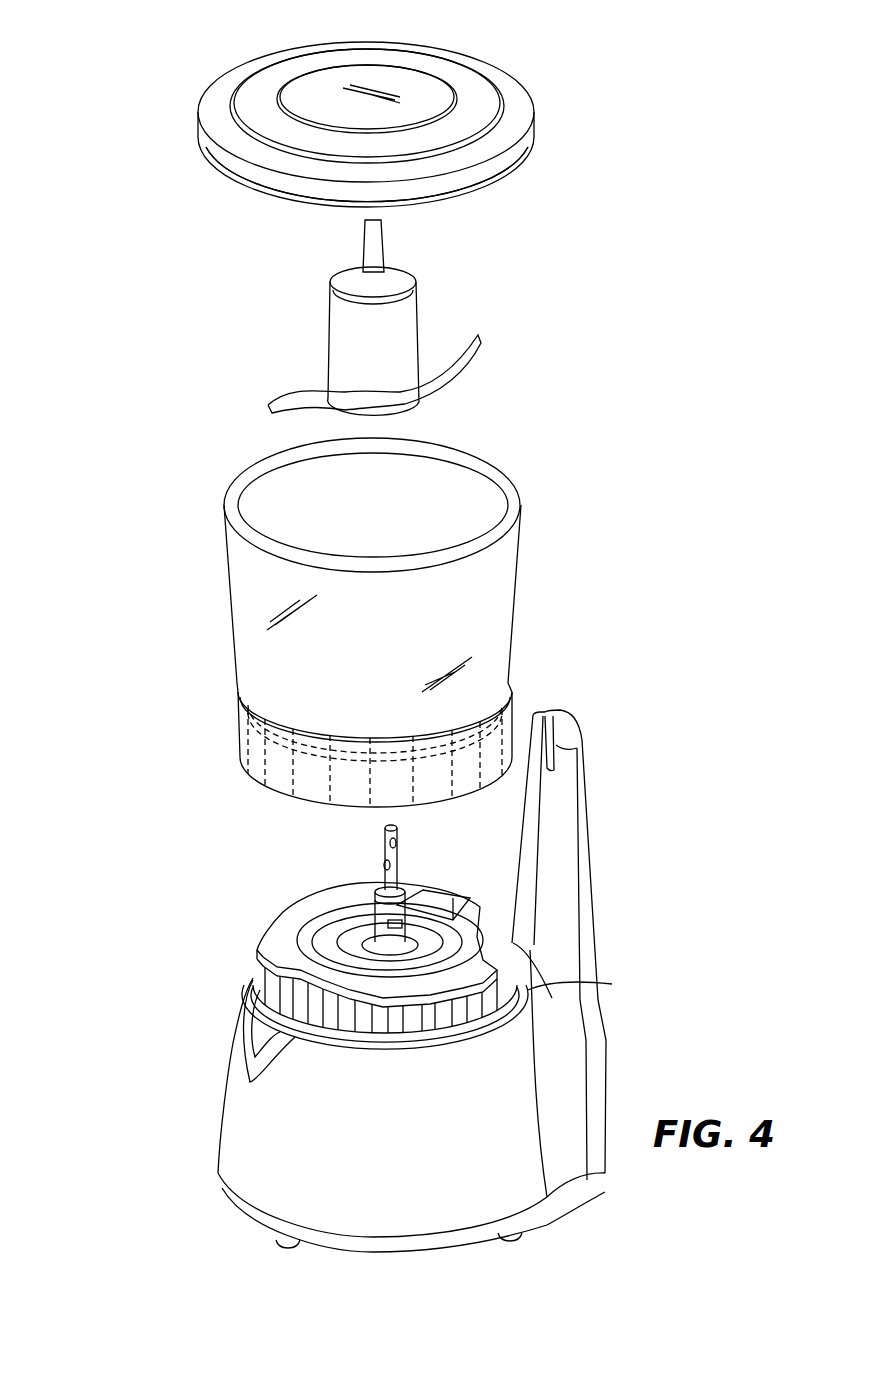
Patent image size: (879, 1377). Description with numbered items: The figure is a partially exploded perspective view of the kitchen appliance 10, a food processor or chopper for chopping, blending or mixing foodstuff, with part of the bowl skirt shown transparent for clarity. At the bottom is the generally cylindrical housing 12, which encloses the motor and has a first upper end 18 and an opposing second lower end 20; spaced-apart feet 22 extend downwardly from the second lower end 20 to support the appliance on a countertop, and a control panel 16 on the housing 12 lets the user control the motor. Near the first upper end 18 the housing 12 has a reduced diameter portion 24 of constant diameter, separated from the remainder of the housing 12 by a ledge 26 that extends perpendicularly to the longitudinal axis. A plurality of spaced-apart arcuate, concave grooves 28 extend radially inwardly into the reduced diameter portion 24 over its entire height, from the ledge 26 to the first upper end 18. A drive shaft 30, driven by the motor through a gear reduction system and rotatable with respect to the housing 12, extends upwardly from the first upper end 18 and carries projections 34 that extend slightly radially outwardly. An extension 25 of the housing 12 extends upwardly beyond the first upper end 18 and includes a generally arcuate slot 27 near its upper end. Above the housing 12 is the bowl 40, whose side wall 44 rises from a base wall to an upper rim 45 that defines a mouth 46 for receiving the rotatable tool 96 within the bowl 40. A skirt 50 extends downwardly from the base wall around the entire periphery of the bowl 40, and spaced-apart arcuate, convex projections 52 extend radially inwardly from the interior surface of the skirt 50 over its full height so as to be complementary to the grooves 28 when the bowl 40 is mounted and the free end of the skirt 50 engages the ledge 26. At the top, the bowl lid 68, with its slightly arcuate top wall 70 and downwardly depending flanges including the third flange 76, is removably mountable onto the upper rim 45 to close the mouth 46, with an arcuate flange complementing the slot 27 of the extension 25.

The kitchen appliance 10 is at (183, 56).
The housing 12 is at (232, 1135).
The control panel 16 is at (243, 1017).
The first upper end 18 is at (283, 932).
The second lower end 20 is at (243, 1208).
The feet 22 is at (293, 1240).
The reduced diameter portion 24 is at (255, 952).
The extension 25 is at (568, 857).
The ledge 26 is at (515, 1003).
The slot 27 is at (548, 713).
The grooves 28 is at (448, 1018).
The drive shaft 30 is at (385, 840).
The projections 34 is at (398, 843).
The bowl 40 is at (228, 595).
The side wall 44 is at (493, 607).
The upper rim 45 is at (478, 463).
The mouth 46 is at (280, 488).
The skirt 50 is at (238, 732).
The projections 52 is at (312, 785).
The bowl lid 68 is at (513, 100).
The top wall 70 is at (327, 93).
The third flange 76 is at (477, 182).
The rotatable tool 96 is at (330, 323).